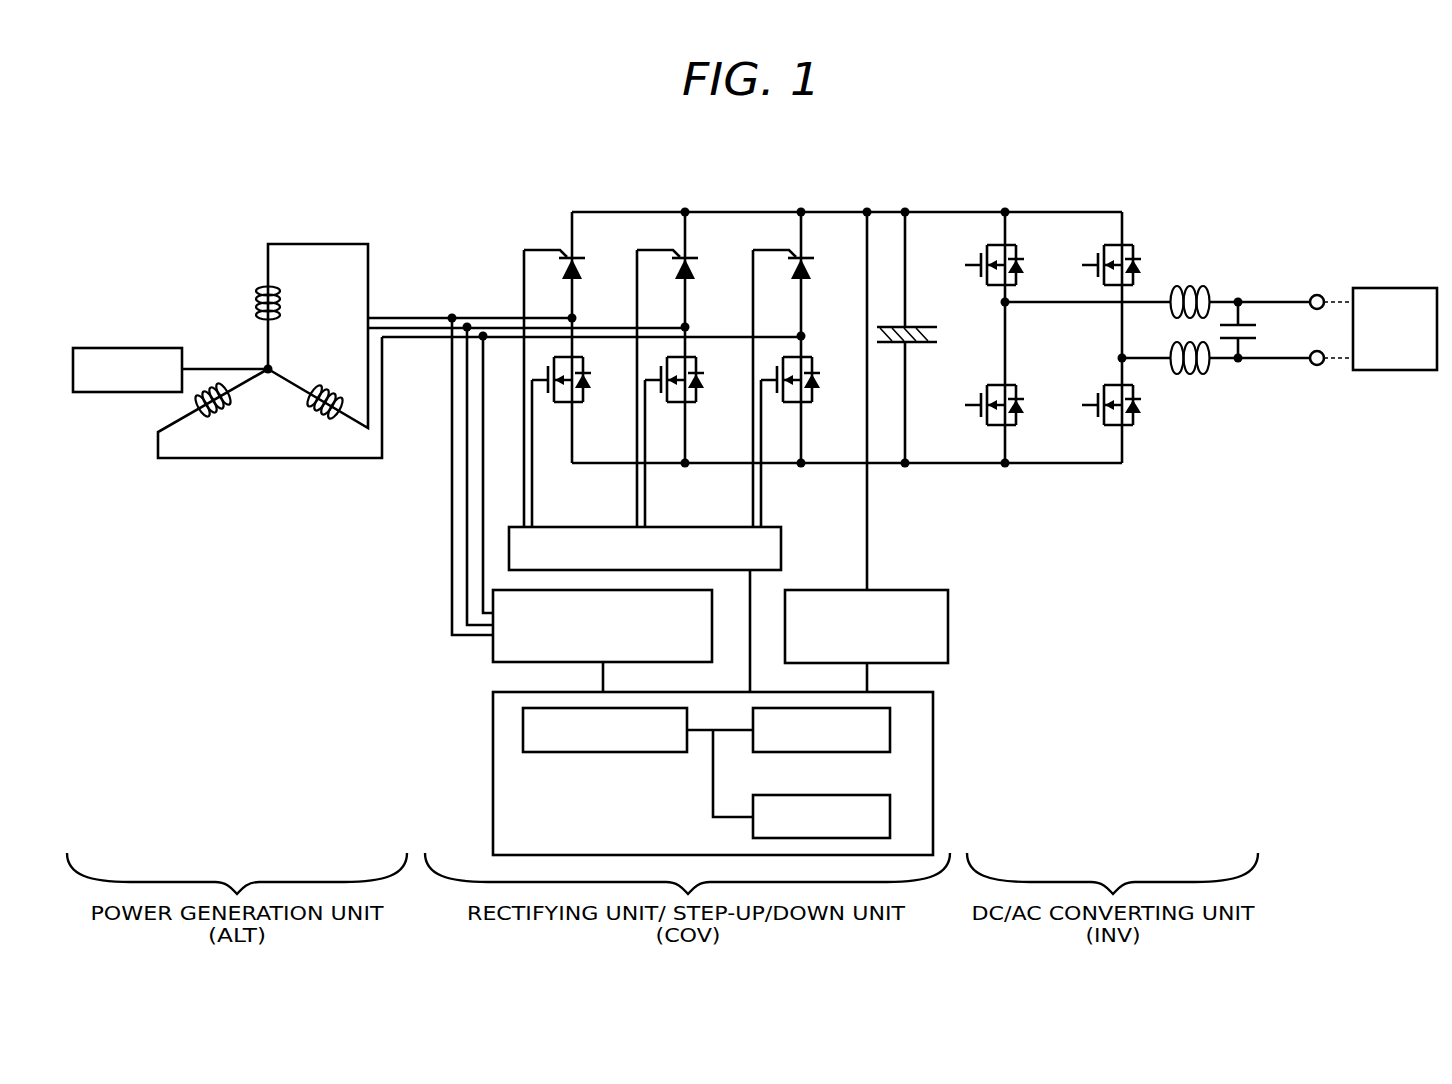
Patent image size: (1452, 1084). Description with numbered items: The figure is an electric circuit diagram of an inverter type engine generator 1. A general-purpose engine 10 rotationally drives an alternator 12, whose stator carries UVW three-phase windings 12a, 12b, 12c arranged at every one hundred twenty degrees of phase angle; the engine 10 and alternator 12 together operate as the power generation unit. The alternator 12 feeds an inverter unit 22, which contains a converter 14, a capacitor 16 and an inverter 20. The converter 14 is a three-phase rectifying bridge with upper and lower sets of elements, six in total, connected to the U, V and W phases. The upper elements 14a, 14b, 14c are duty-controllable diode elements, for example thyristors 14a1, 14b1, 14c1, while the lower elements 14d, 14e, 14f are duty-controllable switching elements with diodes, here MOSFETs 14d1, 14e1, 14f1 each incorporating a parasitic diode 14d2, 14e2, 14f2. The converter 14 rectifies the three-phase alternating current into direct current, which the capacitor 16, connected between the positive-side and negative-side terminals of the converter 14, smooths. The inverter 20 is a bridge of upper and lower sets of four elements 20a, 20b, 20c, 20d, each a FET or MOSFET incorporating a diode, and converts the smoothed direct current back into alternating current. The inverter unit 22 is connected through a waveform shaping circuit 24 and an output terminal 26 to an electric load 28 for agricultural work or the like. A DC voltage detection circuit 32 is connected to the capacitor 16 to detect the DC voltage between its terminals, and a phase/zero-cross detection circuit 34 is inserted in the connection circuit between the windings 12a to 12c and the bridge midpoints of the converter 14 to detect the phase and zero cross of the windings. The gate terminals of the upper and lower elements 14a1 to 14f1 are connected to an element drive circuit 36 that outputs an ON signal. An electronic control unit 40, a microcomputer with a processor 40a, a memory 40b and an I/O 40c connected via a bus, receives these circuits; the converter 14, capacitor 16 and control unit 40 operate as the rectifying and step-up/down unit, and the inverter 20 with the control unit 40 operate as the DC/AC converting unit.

The generator 1 is at (422, 533).
The engine 10 is at (147, 348).
The alternator 12 is at (295, 351).
The three-phase winding 12a is at (252, 298).
The three-phase winding 12b is at (335, 388).
The three-phase winding 12c is at (223, 410).
The converter 14 is at (888, 168).
The upper element 14a is at (572, 346).
The duty-controllable diode element 14a1 is at (585, 268).
The upper element 14b is at (695, 346).
The duty-controllable diode element 14b1 is at (697, 270).
The upper element 14c is at (818, 346).
The duty-controllable diode element 14c1 is at (813, 270).
The lower element 14d is at (582, 442).
The MOSFET 14d1 is at (544, 393).
The parasitic diode 14d2 is at (592, 398).
The lower element 14e is at (696, 442).
The MOSFET 14e1 is at (657, 393).
The parasitic diode 14e2 is at (705, 398).
The lower element 14f is at (811, 442).
The MOSFET 14f1 is at (773, 393).
The parasitic diode 14f2 is at (821, 398).
The capacitor 16 is at (910, 327).
The inverter 20 is at (1066, 312).
The element 20a is at (984, 253).
The element 20b is at (1101, 253).
The element 20c is at (984, 394).
The element 20d is at (1101, 394).
The inverter unit 22 is at (1072, 312).
The waveform shaping circuit 24 is at (1200, 283).
The output terminal 26 is at (1314, 295).
The electric load 28 is at (1372, 288).
The DC voltage detection circuit 32 is at (912, 590).
The phase/zero-cross detection circuit 34 is at (707, 590).
The element drive circuit 36 is at (781, 552).
The electronic control unit 40 is at (741, 772).
The processor 40a is at (632, 752).
The memory 40b is at (857, 752).
The I/O 40c is at (753, 830).